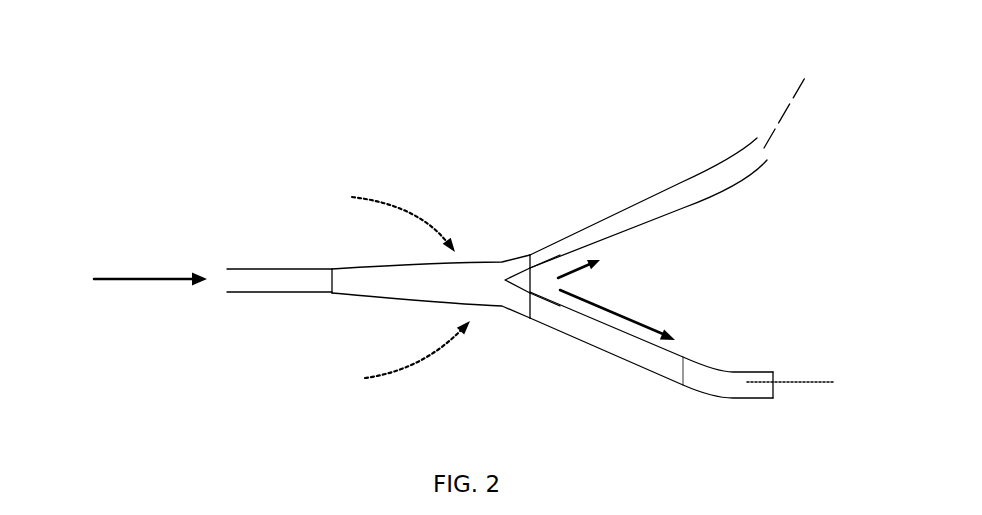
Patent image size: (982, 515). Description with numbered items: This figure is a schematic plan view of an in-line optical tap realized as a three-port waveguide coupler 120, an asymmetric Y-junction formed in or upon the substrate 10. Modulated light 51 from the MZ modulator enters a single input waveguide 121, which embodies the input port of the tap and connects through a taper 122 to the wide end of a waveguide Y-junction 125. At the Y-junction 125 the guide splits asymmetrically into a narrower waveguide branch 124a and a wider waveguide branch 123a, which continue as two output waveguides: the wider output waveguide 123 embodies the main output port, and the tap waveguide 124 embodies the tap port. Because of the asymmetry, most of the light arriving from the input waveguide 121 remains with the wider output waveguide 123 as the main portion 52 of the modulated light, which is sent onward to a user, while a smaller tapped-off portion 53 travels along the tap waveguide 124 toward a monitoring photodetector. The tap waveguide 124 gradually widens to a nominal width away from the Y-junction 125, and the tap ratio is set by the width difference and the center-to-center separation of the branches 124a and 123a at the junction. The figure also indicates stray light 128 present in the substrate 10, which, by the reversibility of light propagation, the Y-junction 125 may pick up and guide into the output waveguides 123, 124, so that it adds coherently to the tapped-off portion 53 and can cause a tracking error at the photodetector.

The substrate 10 is at (270, 128).
The modulated light 51 is at (132, 278).
The main portion of the modulated light 52 is at (627, 318).
The tapped-off portion of the modulated light 53 is at (582, 271).
The three-port waveguide coupler 120 is at (462, 83).
The input waveguide 121 is at (300, 295).
The taper 122 is at (378, 300).
The output waveguide 123 is at (600, 350).
The wider waveguide branch 123a is at (512, 318).
The tap waveguide 124 is at (643, 198).
The narrower waveguide branch 124a is at (503, 262).
The waveguide Y-junction 125 is at (475, 263).
The stray light 128 is at (352, 192).